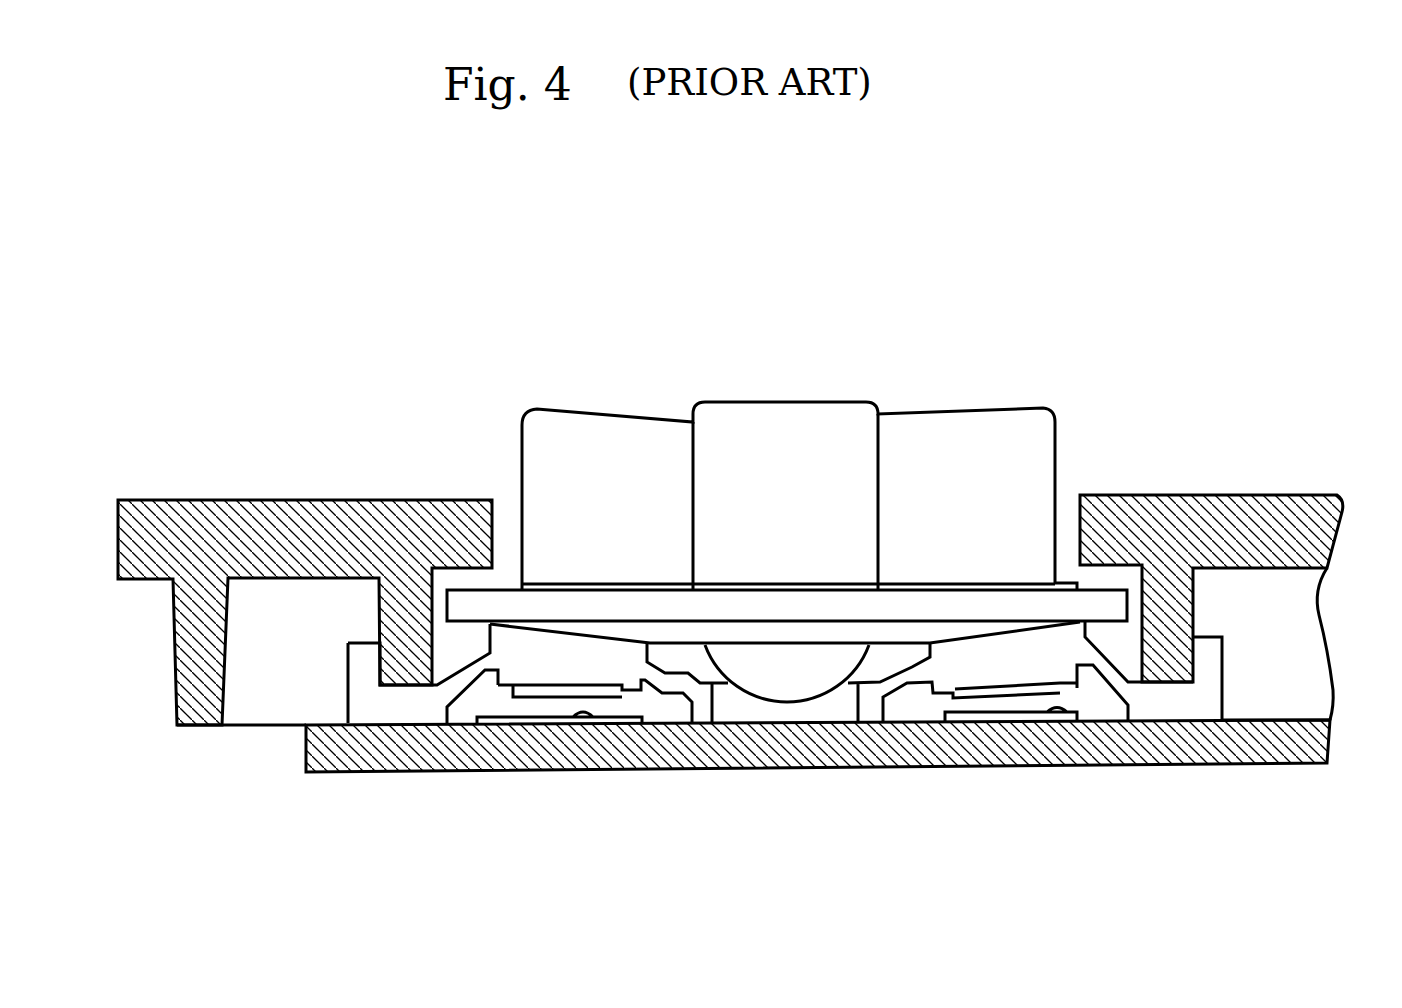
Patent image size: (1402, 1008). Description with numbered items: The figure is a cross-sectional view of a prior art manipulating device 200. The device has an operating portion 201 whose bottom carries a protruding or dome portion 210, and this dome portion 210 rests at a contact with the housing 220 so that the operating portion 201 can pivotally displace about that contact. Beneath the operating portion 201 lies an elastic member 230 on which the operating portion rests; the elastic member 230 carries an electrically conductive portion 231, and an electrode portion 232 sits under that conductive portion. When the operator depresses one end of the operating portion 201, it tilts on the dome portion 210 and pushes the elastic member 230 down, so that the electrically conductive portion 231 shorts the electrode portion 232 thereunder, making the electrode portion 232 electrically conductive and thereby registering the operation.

The manipulating device 200 is at (1317, 283).
The operating portion 201 is at (987, 410).
The dome portion 210 is at (800, 688).
The housing 220 is at (232, 498).
The elastic member 230 is at (368, 705).
The electrically conductive portion 231 is at (533, 697).
The electrode portion 232 is at (623, 722).